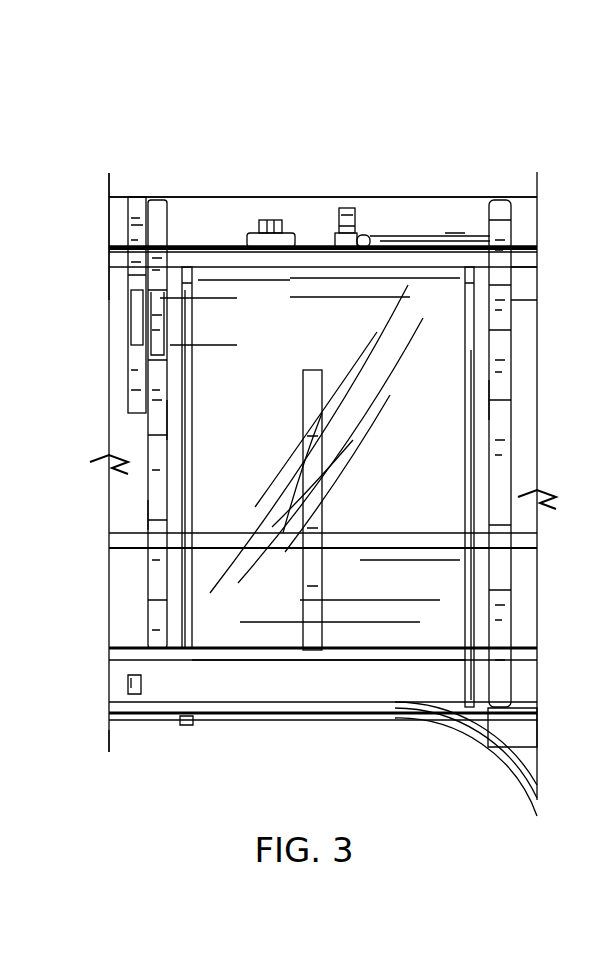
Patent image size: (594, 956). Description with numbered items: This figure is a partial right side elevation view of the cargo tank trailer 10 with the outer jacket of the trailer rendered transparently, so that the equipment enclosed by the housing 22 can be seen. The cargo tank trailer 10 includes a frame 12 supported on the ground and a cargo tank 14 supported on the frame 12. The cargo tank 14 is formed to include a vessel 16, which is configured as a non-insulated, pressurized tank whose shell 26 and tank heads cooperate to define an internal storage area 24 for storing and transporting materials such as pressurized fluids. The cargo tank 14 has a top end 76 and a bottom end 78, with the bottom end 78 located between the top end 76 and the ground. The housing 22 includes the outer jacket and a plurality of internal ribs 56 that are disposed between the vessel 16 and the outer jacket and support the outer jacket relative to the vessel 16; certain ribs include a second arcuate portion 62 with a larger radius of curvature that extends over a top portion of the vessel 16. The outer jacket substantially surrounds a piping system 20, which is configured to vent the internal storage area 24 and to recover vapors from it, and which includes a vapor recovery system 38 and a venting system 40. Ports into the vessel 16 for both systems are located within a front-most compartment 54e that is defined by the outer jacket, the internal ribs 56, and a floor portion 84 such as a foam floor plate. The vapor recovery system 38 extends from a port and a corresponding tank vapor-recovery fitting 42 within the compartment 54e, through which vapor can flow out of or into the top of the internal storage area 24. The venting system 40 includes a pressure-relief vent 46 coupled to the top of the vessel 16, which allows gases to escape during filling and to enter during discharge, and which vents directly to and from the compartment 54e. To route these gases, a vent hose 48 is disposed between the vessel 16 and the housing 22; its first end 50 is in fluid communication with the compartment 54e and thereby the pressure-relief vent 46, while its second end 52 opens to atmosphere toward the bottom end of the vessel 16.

The cargo tank trailer 10 is at (348, 110).
The frame 12 is at (235, 724).
The cargo tank 14 is at (187, 232).
The vessel 16 is at (387, 616).
The piping system 20 is at (279, 135).
The housing 22 is at (125, 224).
The internal storage area 24 is at (278, 585).
The shell 26 is at (523, 327).
The vapor recovery system 38 is at (371, 212).
The venting system 40 is at (244, 210).
The tank vapor-recovery fitting 42 is at (342, 255).
The pressure-relief vent 46 is at (290, 222).
The vent hose 48 is at (175, 420).
The first end 50 is at (462, 286).
The second end 52 is at (468, 657).
The front-most compartment 54e is at (405, 218).
The internal ribs 56 is at (147, 513).
The second arcuate portion 62 is at (138, 205).
The top end 76 is at (462, 186).
The bottom end 78 is at (145, 738).
The floor portion 84 is at (217, 257).